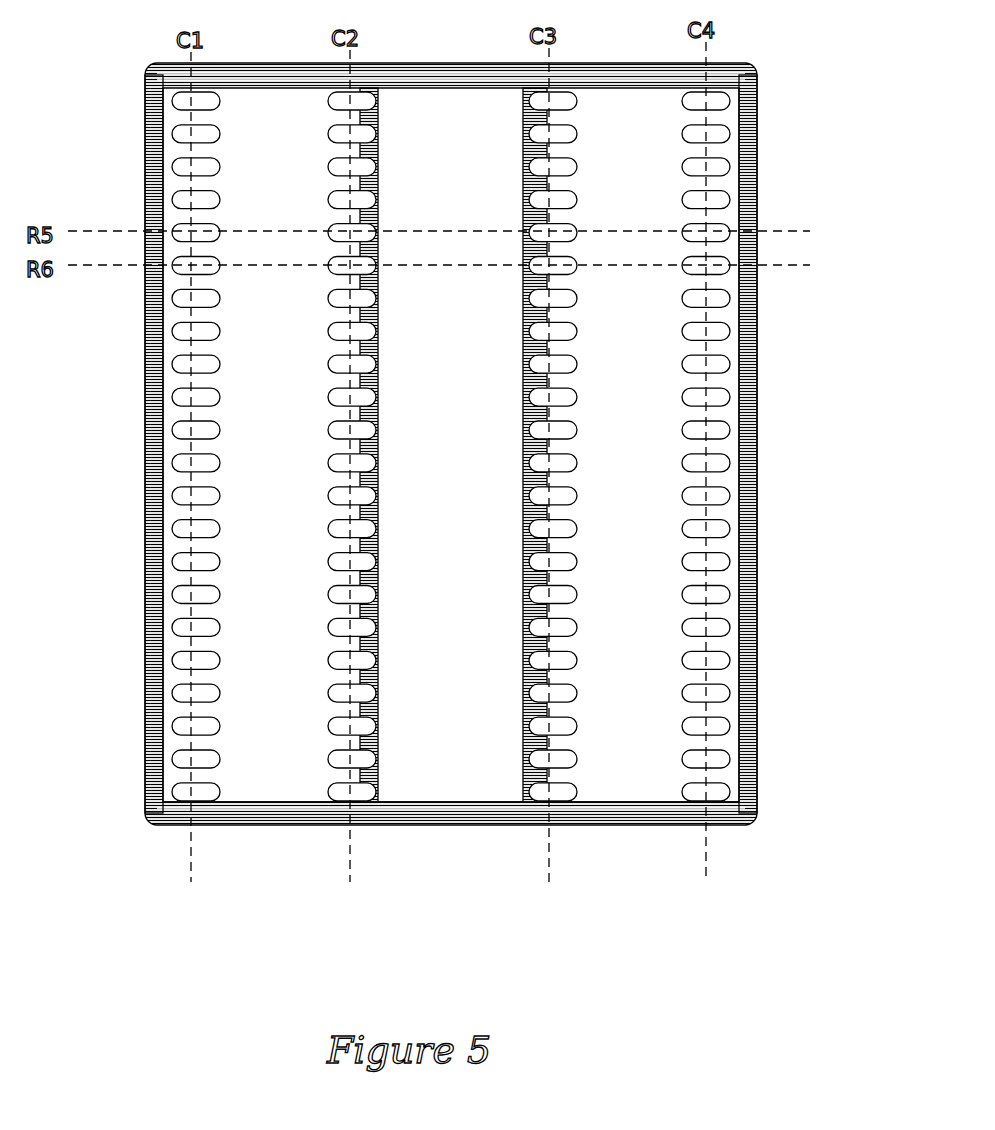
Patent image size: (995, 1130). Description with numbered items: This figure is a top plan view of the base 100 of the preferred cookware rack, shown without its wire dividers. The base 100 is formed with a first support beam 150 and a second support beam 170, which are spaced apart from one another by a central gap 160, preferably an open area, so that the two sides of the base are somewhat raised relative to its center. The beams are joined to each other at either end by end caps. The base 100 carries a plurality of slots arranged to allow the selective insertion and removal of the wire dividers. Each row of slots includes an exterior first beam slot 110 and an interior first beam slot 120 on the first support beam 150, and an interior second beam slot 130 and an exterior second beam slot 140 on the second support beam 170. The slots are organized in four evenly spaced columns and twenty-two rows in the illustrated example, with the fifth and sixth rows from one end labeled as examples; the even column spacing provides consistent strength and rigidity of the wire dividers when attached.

The base 100 is at (770, 713).
The exterior first beam slot 110 is at (163, 231).
The interior first beam slot 120 is at (330, 228).
The interior second beam slot 130 is at (728, 228).
The exterior second beam slot 140 is at (560, 231).
The first support beam 150 is at (243, 783).
The central gap 160 is at (428, 784).
The second support beam 170 is at (595, 782).